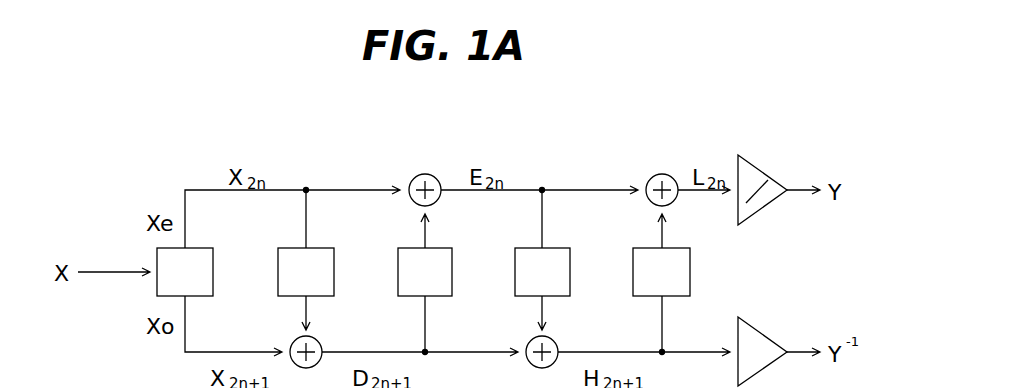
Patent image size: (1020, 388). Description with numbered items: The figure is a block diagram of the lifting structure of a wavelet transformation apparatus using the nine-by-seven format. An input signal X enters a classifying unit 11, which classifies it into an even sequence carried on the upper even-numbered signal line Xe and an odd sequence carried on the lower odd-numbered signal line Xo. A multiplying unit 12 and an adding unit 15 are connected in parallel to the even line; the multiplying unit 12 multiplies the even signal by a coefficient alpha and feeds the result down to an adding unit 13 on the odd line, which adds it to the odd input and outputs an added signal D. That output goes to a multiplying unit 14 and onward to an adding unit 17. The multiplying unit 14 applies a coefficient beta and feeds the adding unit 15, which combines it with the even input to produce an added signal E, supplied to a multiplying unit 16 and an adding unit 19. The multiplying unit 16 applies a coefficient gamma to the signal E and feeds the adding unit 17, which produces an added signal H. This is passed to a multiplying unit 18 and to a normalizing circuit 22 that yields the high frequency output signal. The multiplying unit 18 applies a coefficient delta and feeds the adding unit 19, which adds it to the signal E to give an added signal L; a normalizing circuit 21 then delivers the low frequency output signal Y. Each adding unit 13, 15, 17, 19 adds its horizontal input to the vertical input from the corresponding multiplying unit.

The classifying unit 11 is at (200, 248).
The multiplying unit 12 is at (320, 248).
The adding unit 13 is at (318, 342).
The multiplying unit 14 is at (440, 248).
The adding unit 15 is at (424, 174).
The multiplying unit 16 is at (557, 248).
The adding unit 17 is at (555, 342).
The multiplying unit 18 is at (677, 248).
The adding unit 19 is at (663, 174).
The normalizing circuit 21 is at (760, 167).
The normalizing circuit 22 is at (761, 329).